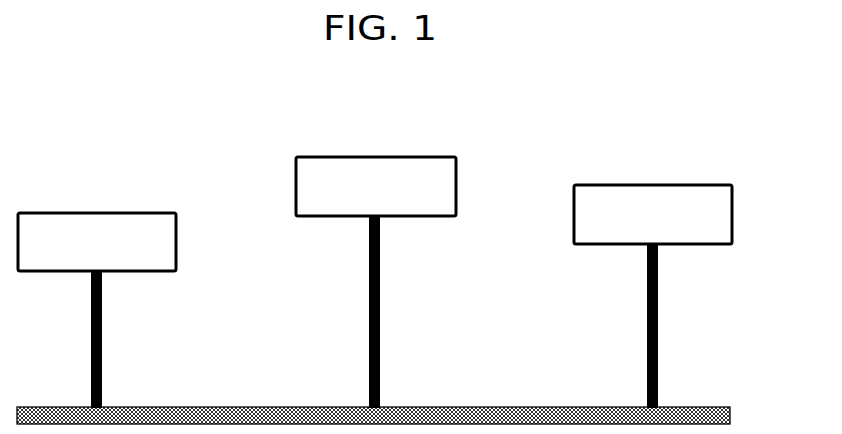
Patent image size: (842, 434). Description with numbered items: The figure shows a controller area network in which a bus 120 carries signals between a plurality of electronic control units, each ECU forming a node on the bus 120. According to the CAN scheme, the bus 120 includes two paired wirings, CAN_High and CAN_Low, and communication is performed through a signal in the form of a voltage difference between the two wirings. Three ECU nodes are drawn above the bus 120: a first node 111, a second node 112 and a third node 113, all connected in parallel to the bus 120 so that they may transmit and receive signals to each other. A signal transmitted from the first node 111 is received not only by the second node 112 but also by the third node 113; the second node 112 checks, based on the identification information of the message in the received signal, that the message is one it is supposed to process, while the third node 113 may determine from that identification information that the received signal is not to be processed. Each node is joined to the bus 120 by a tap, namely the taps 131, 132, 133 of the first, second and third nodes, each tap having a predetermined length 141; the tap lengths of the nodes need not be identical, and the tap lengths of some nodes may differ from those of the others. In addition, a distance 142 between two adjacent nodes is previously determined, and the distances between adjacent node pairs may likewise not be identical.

The first node 111 is at (125, 212).
The second node 112 is at (400, 156).
The third node 113 is at (680, 184).
The bus 120 is at (731, 414).
The tap 131 is at (103, 313).
The tap 132 is at (381, 313).
The tap 133 is at (659, 313).
The predetermined length 141 is at (68, 274).
The distance 142 is at (367, 396).